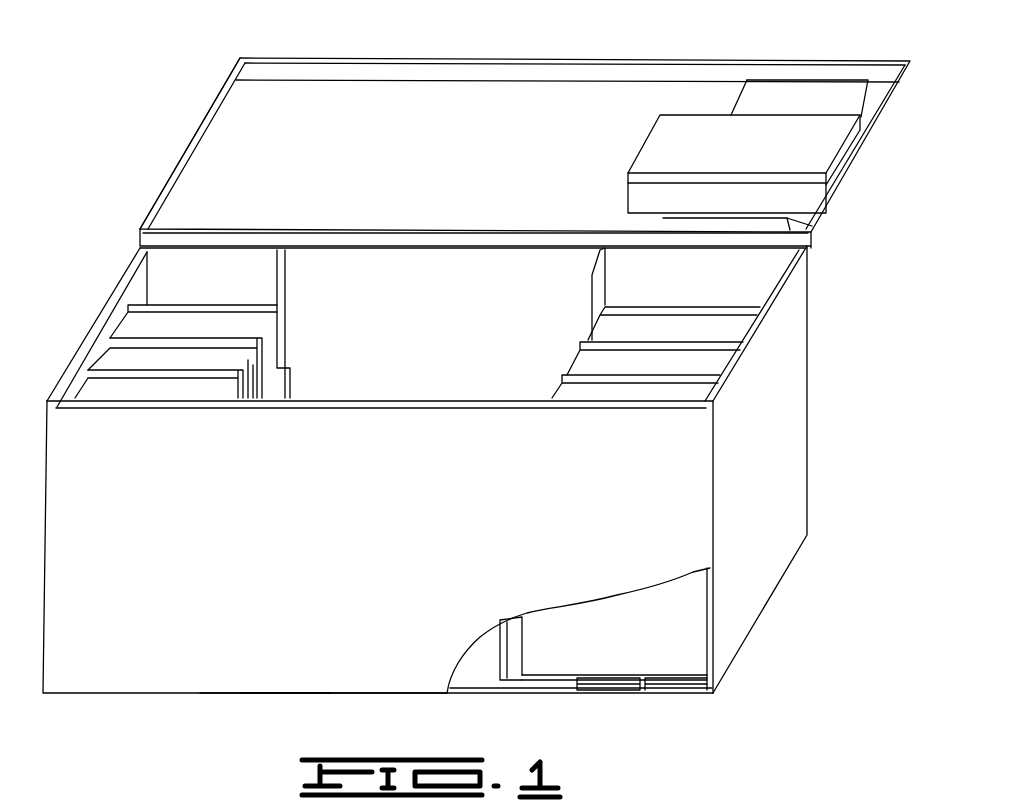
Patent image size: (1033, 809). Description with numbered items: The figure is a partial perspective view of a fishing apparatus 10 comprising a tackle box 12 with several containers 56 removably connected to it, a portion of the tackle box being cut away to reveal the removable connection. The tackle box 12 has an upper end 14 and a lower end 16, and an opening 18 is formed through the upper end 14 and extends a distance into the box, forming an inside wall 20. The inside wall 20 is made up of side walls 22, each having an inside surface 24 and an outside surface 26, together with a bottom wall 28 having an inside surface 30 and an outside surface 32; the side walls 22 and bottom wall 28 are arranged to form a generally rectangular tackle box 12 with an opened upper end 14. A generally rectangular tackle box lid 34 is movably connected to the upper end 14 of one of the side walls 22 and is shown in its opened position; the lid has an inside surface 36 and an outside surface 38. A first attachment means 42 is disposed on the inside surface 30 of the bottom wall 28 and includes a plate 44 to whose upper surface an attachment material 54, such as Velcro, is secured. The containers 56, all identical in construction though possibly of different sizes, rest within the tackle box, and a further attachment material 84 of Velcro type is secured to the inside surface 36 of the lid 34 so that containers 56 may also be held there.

The fishing apparatus 10 is at (145, 190).
The tackle box 12 is at (143, 697).
The upper end 14 is at (762, 330).
The lower end 16 is at (262, 698).
The opening 18 is at (122, 272).
The inside wall 20 is at (380, 282).
The side walls 22 is at (332, 408).
The inside surface 24 is at (462, 285).
The outside surface 26 is at (236, 676).
The bottom wall 28 is at (484, 686).
The inside surface 30 is at (478, 662).
The outside surface 32 is at (460, 700).
The tackle box lid 34 is at (350, 95).
The inside surface 36 is at (515, 135).
The outside surface 38 is at (838, 212).
The first attachment means 42 is at (650, 690).
The plate 44 is at (715, 689).
The attachment material 54 is at (595, 683).
The containers 56 is at (660, 143).
The attachment material 84 is at (788, 95).